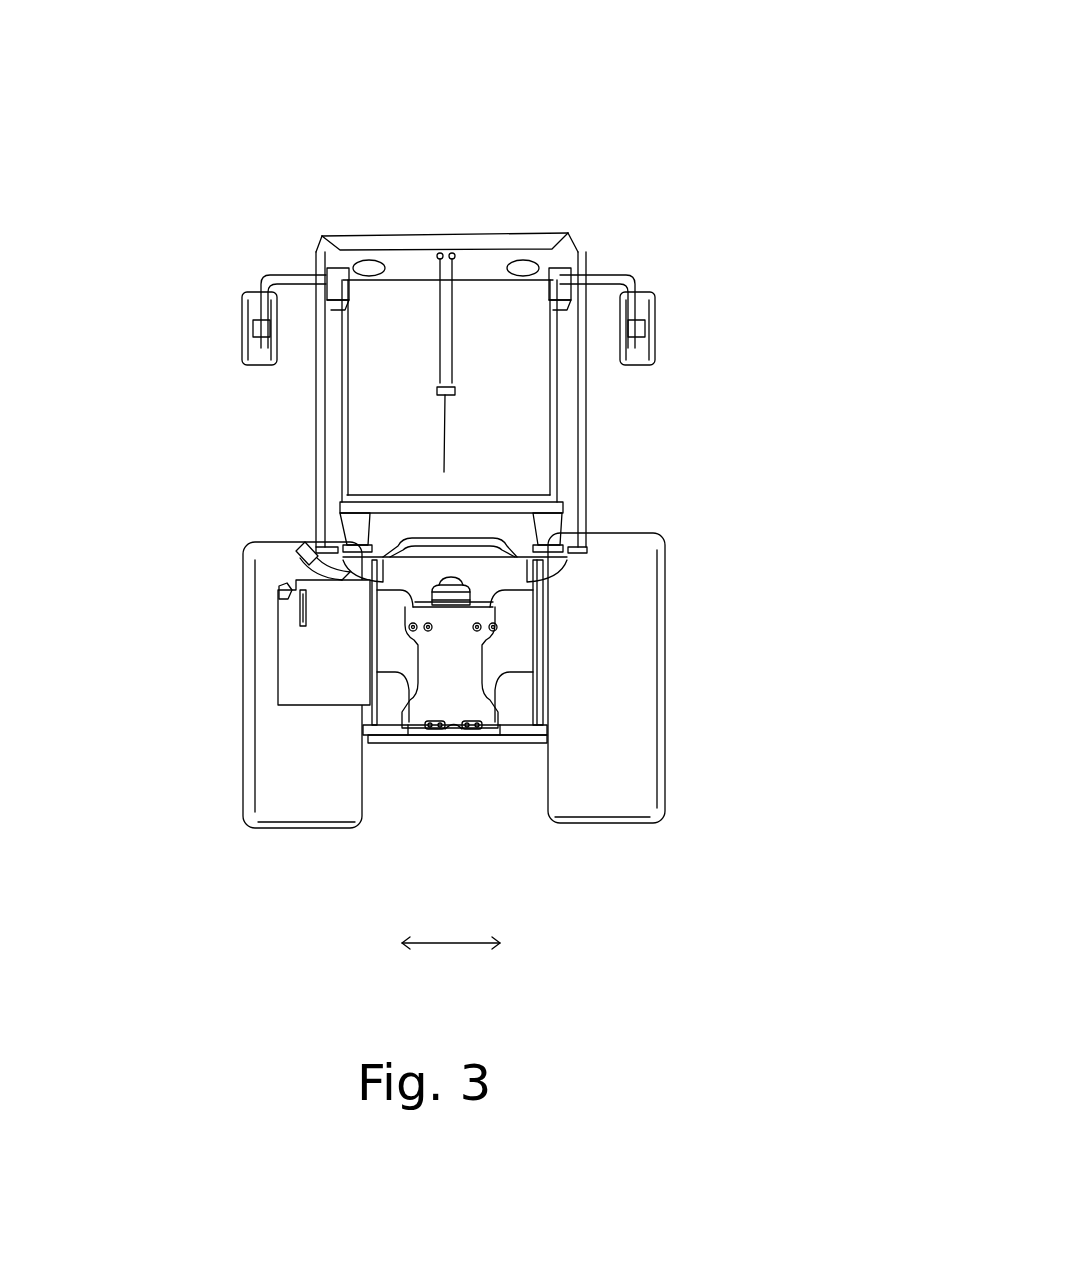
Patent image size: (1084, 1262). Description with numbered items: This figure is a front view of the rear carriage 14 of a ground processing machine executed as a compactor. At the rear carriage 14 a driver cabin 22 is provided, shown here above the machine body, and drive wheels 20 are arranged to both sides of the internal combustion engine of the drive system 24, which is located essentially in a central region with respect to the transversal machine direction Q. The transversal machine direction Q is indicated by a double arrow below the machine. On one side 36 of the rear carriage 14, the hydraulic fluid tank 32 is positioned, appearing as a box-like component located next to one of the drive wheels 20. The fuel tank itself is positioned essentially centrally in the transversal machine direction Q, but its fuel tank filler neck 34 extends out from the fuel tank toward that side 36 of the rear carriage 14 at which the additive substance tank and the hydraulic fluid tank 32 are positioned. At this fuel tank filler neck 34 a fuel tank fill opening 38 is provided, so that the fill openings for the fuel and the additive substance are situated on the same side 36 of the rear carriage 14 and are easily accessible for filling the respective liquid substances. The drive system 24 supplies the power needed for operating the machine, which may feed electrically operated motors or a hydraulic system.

The rear carriage 14 is at (664, 108).
The drive wheels 20 is at (243, 576).
The driver cabin 22 is at (418, 235).
The drive system 24 is at (500, 763).
The hydraulic fluid tank 32 is at (295, 648).
The fuel tank filler neck 34 is at (297, 567).
The side of the rear carriage 36 is at (150, 558).
The fuel tank fill opening 38 is at (302, 549).
The transversal machine direction Q is at (467, 943).